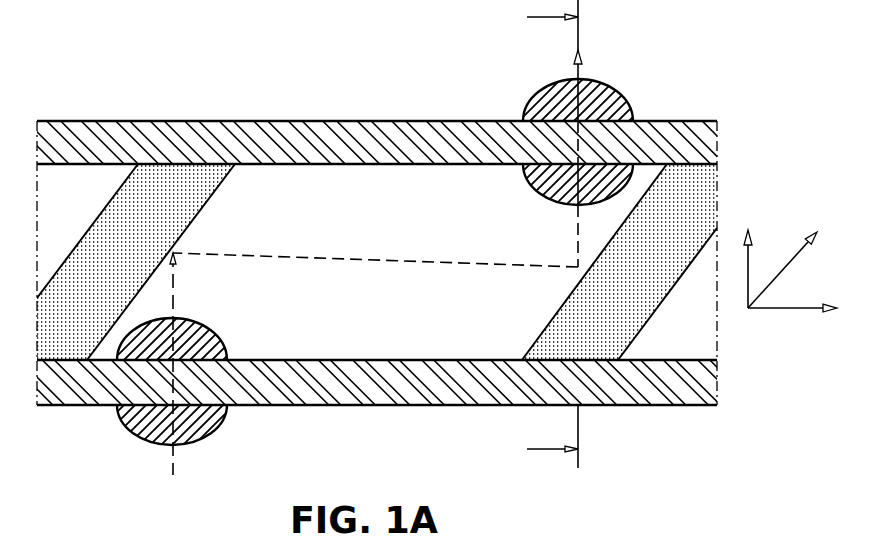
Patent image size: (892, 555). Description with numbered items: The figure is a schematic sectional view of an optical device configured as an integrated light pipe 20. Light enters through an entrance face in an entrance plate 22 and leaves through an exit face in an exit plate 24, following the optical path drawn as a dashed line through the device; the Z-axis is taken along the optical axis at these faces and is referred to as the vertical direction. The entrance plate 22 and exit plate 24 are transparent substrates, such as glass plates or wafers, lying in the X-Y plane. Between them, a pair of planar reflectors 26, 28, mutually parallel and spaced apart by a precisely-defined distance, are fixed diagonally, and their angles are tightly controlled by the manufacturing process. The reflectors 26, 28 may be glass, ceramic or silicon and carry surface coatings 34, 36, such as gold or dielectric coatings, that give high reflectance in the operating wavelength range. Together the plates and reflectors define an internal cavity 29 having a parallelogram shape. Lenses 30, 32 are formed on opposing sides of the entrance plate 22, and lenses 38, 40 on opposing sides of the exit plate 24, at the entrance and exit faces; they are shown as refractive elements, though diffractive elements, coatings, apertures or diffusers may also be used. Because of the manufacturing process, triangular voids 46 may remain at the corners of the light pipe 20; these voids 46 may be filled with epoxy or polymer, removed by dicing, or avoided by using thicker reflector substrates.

The integrated light pipe 20 is at (428, 239).
The entrance plate 22 is at (77, 393).
The exit plate 24 is at (77, 138).
The planar reflector 26 is at (101, 245).
The planar reflector 28 is at (637, 307).
The internal cavity 29 is at (387, 237).
The lens 30 is at (203, 423).
The lens 32 is at (200, 335).
The surface coating 34 is at (203, 200).
The surface coating 36 is at (541, 331).
The lens 38 is at (541, 199).
The lens 40 is at (545, 95).
The triangular void 46 is at (85, 195).